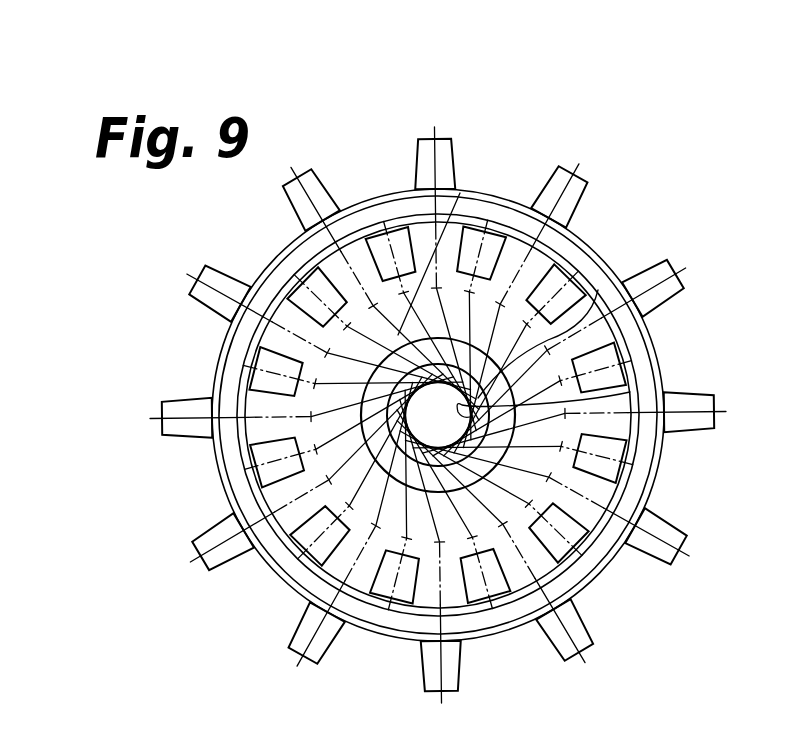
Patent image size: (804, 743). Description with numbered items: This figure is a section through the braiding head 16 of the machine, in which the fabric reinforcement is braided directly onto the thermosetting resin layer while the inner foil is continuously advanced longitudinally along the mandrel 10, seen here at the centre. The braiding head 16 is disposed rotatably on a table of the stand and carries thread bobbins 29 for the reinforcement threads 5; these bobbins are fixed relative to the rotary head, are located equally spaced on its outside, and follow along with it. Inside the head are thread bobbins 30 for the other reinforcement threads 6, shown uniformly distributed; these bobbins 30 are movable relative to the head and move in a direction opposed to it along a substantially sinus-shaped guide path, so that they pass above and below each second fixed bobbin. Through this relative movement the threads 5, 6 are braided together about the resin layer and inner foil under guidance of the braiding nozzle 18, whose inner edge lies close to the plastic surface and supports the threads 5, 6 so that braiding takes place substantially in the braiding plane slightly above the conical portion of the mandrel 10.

The braiding head 16 is at (514, 168).
The reinforcement threads 6 is at (460, 193).
The thread bobbins 30 is at (553, 268).
The reinforcement threads 5 is at (598, 290).
The thread bobbins 29 is at (661, 259).
The mandrel 10 is at (630, 392).
The braiding nozzle 18 is at (512, 626).